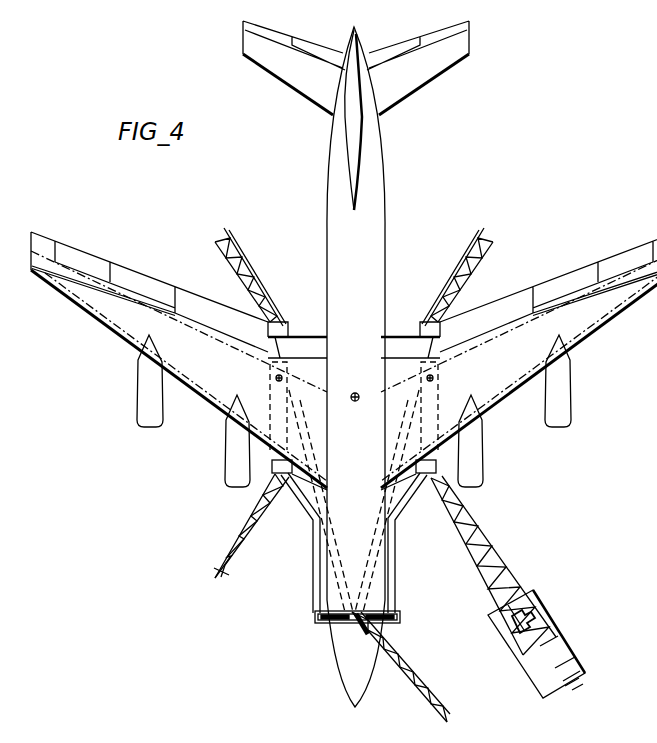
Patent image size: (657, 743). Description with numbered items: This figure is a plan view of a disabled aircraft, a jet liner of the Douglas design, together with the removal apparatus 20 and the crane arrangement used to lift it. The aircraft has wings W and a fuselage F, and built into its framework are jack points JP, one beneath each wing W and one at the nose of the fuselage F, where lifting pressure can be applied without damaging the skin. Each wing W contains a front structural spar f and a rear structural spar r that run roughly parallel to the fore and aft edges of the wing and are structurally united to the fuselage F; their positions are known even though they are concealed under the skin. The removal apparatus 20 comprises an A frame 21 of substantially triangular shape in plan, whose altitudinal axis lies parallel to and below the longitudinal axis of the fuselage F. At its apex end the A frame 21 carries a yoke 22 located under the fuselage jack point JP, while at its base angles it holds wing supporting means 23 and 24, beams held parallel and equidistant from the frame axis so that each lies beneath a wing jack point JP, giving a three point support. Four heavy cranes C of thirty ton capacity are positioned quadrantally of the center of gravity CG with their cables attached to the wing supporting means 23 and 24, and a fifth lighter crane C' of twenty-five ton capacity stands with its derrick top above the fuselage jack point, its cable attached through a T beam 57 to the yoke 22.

The removal apparatus 20 is at (347, 572).
The A frame 21 is at (319, 552).
The yoke 22 is at (316, 618).
The wing supporting means 23 is at (271, 457).
The wing supporting means 24 is at (444, 456).
The T beam 57 is at (379, 616).
The crane C is at (377, 443).
The crane C' is at (401, 667).
The wing W is at (120, 311).
The fuselage F is at (362, 583).
The jack point JP is at (276, 378).
The center of gravity CG is at (374, 379).
The rear structural spar r is at (213, 337).
The front structural spar f is at (198, 384).